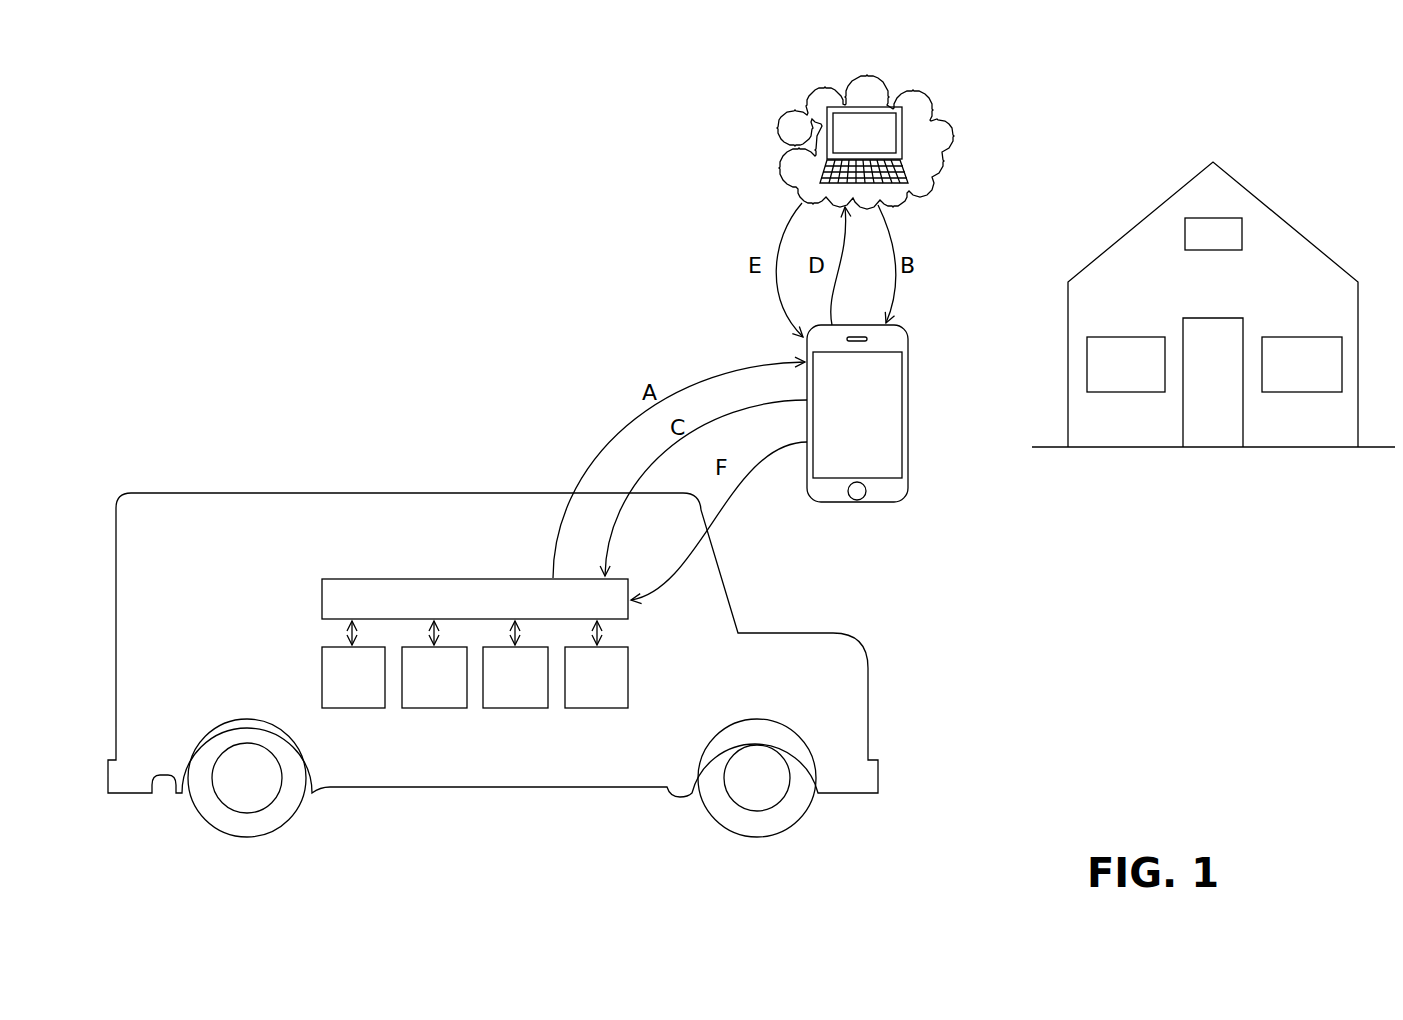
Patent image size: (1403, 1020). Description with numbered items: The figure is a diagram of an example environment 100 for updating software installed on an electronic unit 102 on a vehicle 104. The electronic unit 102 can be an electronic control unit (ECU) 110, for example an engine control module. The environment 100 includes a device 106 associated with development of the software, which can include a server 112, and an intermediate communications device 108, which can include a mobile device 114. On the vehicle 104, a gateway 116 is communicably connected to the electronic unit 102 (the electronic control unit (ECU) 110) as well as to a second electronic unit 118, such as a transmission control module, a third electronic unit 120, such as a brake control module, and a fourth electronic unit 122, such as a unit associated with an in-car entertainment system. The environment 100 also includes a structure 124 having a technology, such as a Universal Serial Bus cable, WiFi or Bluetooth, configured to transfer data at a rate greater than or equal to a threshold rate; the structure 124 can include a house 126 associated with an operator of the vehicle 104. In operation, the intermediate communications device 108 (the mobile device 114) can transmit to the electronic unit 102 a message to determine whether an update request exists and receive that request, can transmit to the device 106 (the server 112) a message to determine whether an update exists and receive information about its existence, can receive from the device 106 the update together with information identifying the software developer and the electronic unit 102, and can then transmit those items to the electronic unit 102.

The environment 100 is at (220, 196).
The electronic unit 102 is at (353, 677).
The vehicle 104 is at (458, 493).
The device 106 is at (911, 132).
The intermediate communications device 108 is at (909, 385).
The electronic control unit (ECU) 110 is at (371, 702).
The server 112 is at (957, 131).
The mobile device 114 is at (922, 346).
The gateway 116 is at (598, 611).
The second electronic unit 118 is at (454, 688).
The third electronic unit 120 is at (534, 688).
The fourth electronic unit 122 is at (615, 688).
The structure 124 is at (1213, 269).
The house 126 is at (1302, 178).